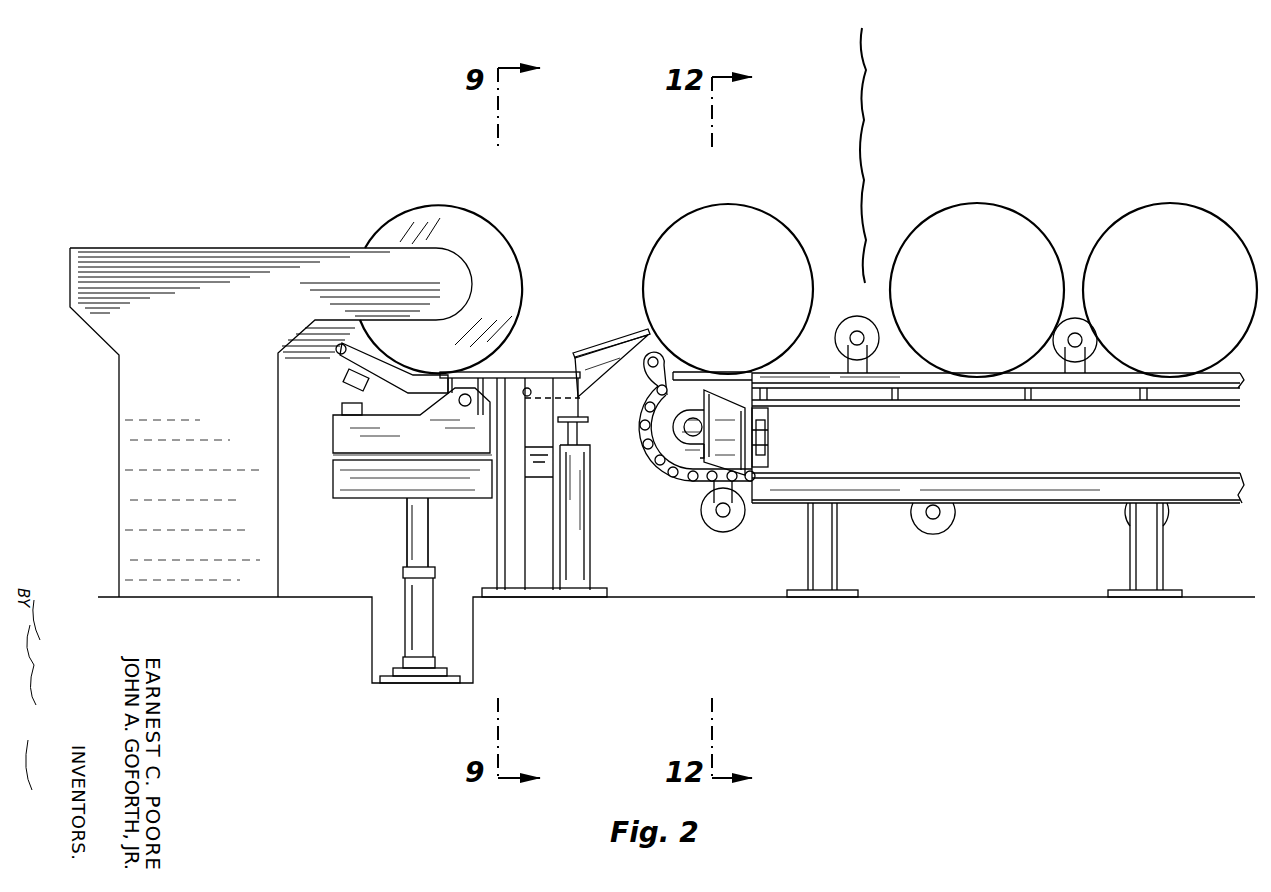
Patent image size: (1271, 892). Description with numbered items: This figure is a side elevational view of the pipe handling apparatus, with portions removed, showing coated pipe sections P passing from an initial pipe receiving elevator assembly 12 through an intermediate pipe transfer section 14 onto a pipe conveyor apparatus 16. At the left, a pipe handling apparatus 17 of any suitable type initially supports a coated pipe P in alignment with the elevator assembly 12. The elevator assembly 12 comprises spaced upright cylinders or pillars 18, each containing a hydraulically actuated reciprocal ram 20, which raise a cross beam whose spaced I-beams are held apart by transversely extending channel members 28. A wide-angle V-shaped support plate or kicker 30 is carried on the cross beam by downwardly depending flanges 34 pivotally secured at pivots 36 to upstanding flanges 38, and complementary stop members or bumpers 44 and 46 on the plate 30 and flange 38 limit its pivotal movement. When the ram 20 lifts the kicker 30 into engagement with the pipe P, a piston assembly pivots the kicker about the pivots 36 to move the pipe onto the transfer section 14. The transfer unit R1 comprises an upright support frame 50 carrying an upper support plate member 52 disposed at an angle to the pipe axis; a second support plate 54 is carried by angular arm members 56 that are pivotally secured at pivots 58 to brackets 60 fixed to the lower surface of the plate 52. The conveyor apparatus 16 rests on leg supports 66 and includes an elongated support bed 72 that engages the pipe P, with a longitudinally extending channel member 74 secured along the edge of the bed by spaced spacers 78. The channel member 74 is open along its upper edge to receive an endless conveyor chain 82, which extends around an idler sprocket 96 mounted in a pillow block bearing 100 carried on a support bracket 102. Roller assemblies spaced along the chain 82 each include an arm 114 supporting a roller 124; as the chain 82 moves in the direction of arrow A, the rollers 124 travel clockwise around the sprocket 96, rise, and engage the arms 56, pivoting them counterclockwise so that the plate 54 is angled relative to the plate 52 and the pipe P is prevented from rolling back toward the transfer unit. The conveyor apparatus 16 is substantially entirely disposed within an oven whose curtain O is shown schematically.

The pipe elevator assembly 12 is at (396, 515).
The intermediate pipe transfer section 14 is at (596, 601).
The pipe conveyor apparatus 16 is at (1028, 528).
The pipe handling apparatus 17 is at (188, 266).
The upright cylinders or pillars 18 is at (418, 620).
The reciprocal ram 20 is at (418, 541).
The transversely extending I-beams or channel members 28 is at (345, 490).
The support plate 30 is at (340, 346).
The downwardly depending flanges 34 is at (472, 375).
The pivots 36 is at (460, 408).
The upstanding flanges 38 is at (350, 432).
The stop member or bumper 44 is at (346, 380).
The stop member or bumper 46 is at (345, 409).
The upright support frame 50 is at (578, 555).
The upper support plate member 52 is at (530, 388).
The second support plate 54 is at (609, 347).
The angular arm members 56 is at (582, 358).
The pivots 58 is at (580, 395).
The flanges or brackets 60 is at (585, 419).
The leg supports 66 is at (830, 556).
The support bed 72 is at (688, 371).
The channel member 74 is at (788, 376).
The spacers 78 is at (900, 400).
The conveyor chain 82 is at (662, 465).
The idler sprocket 96 is at (686, 455).
The pillow block bearing 100 is at (702, 418).
The support bracket 102 is at (760, 437).
The arm 114 is at (868, 332).
The roller 124 is at (846, 332).
The coated pipe section P is at (480, 218).
The arrow A is at (628, 428).
The transfer unit R1 is at (549, 550).
The oven curtain O is at (868, 90).